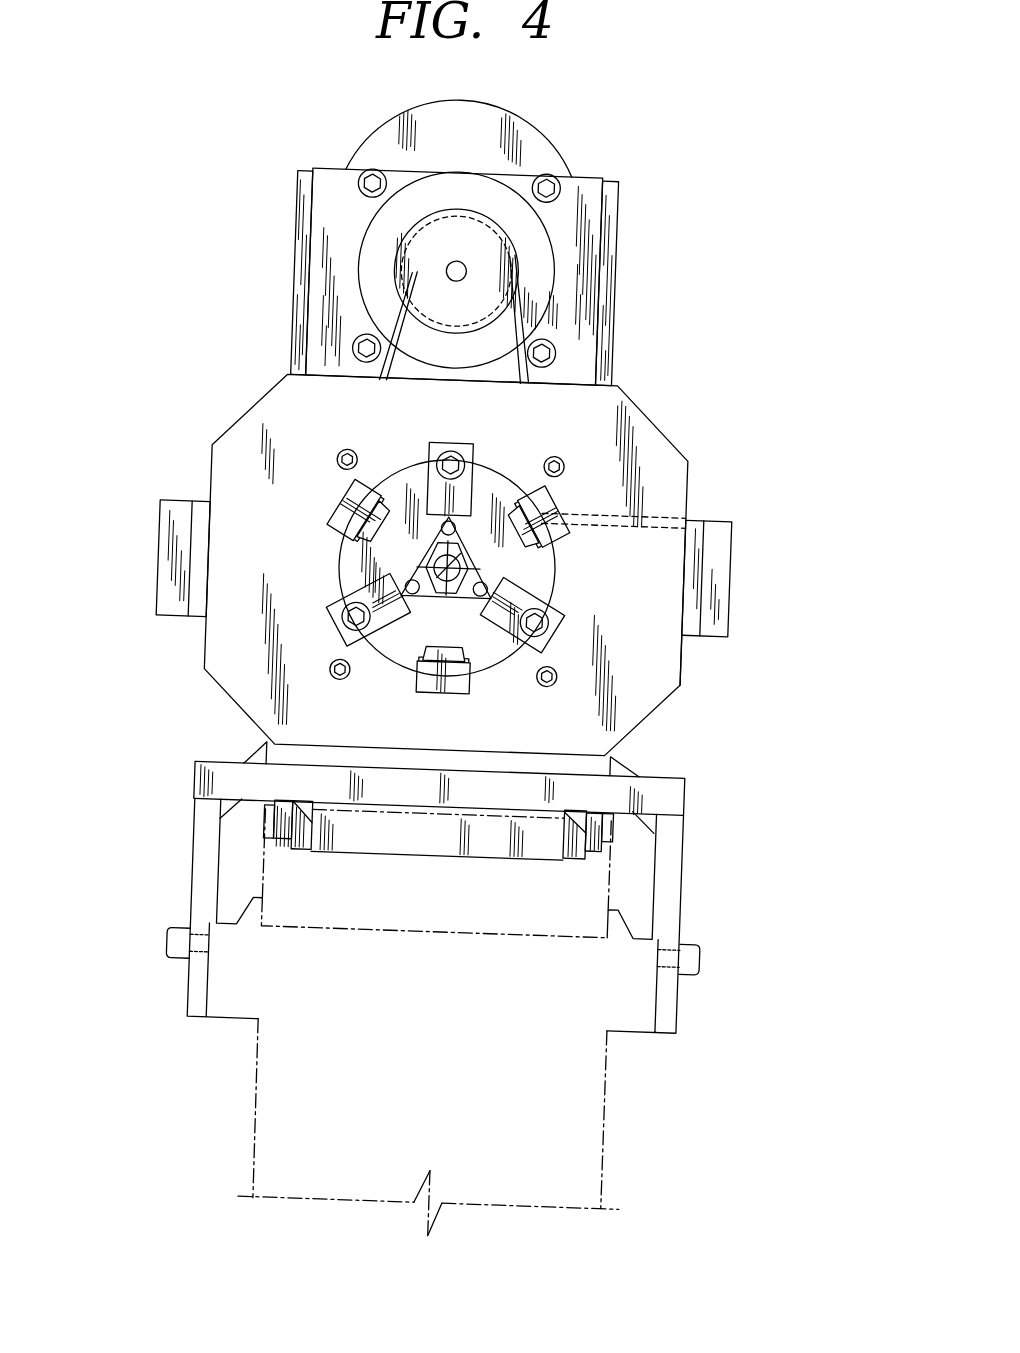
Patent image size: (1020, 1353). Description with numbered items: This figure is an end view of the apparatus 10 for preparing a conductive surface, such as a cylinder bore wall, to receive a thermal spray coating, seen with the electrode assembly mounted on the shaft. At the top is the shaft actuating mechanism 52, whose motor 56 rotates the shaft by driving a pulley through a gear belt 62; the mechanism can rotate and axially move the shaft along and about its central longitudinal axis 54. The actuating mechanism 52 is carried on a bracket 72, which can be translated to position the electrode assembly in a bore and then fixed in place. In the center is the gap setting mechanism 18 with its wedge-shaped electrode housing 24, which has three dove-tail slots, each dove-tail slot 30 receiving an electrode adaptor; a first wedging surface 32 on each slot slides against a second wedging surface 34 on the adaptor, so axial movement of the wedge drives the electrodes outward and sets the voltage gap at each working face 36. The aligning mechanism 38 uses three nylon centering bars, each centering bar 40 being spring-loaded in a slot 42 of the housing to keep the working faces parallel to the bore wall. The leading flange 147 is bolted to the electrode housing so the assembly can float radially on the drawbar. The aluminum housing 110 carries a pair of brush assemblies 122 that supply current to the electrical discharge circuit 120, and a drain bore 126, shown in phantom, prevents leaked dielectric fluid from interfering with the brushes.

The apparatus 10 is at (664, 180).
The gap setting mechanism 18 is at (300, 603).
The wedge-shaped electrode housing 24 is at (542, 580).
The dove-tail slot 30 is at (543, 554).
The first wedging surface 32 is at (449, 694).
The second wedging surface 34 is at (462, 647).
The working face 36 is at (434, 695).
The aligning mechanism 38 is at (436, 442).
The centering bar 40 is at (437, 488).
The slot 42 is at (391, 602).
The shaft actuating mechanism 52 is at (265, 149).
The central longitudinal axis 54 is at (466, 551).
The motor 56 is at (538, 134).
The gear belt 62 is at (518, 320).
The bracket 72 is at (687, 1000).
The housing 110 is at (640, 411).
The electrical discharge circuit 120 is at (696, 639).
The brush assembly 122 is at (158, 562).
The drain bore 126 is at (648, 508).
The leading flange 147 is at (467, 529).